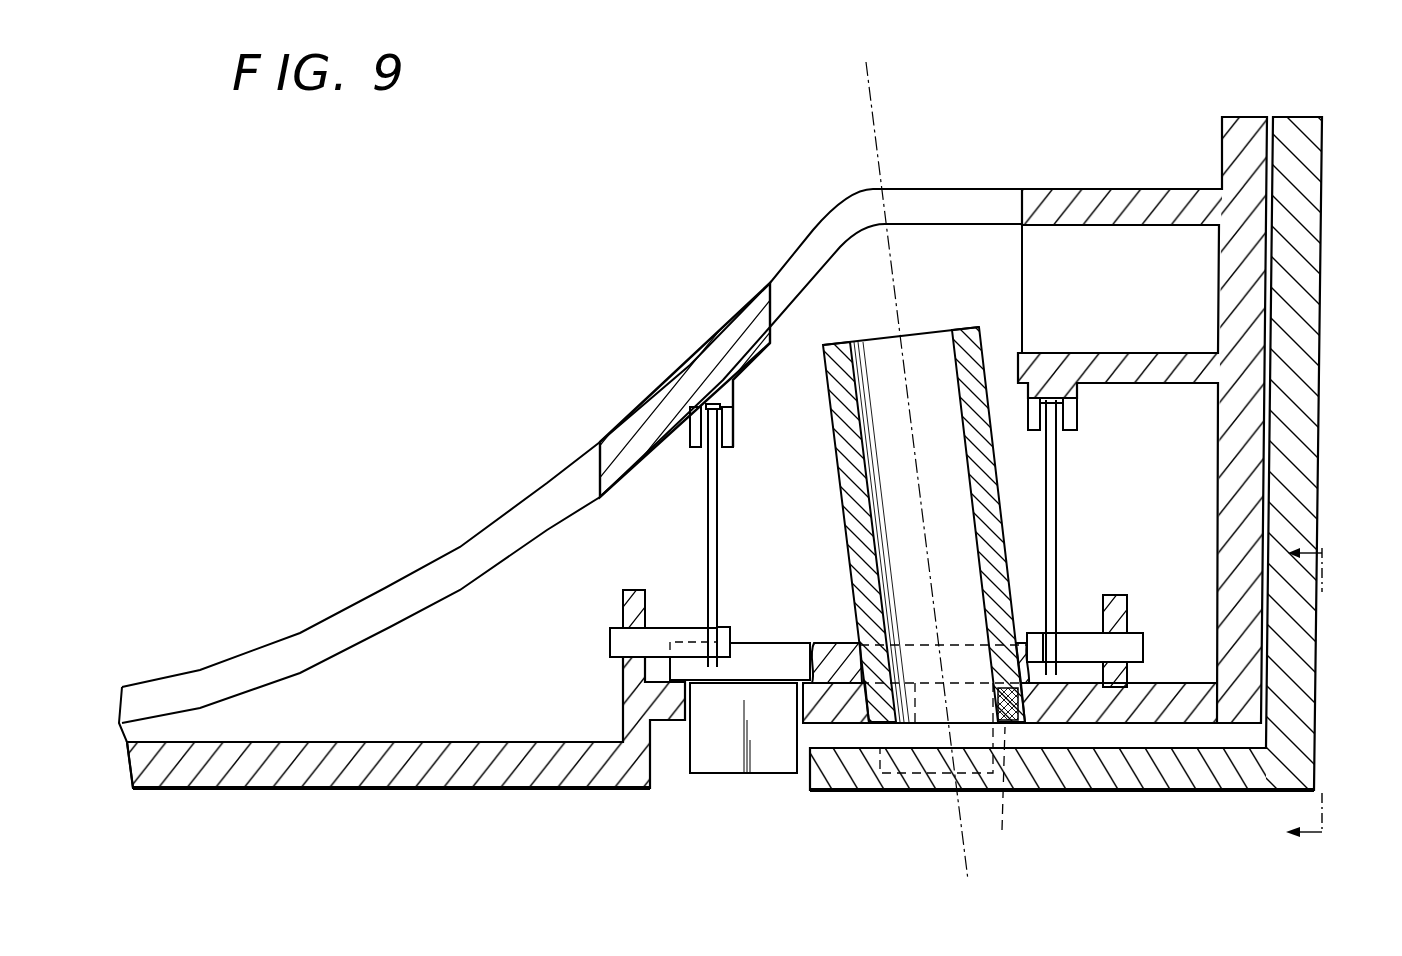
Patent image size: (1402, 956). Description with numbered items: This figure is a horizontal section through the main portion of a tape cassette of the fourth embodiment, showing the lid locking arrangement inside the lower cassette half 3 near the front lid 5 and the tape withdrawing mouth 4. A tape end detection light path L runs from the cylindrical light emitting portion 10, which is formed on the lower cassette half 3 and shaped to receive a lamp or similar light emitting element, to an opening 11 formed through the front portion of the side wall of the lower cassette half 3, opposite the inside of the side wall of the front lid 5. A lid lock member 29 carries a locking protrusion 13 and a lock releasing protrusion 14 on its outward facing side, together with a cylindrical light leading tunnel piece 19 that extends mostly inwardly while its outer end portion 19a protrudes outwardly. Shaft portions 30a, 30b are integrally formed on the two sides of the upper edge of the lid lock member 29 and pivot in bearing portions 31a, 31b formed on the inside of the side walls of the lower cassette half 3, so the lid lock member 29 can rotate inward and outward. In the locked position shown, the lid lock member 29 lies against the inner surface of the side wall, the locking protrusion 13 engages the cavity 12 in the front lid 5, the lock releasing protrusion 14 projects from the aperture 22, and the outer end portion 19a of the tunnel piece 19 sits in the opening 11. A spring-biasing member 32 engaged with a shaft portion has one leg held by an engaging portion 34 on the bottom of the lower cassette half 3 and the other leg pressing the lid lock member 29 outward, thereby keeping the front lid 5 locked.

The lower cassette half 3 is at (375, 775).
The tape withdrawing mouth 4 is at (1243, 265).
The front lid 5 is at (1312, 515).
The cylindrical light emitting portion 10 is at (1324, 700).
The opening 11 is at (1013, 727).
The cavity 12 is at (1012, 795).
The locking protrusion 13 is at (935, 737).
The lock releasing protrusion 14 is at (715, 762).
The cylindrical tunnel piece 19 is at (840, 457).
The outer end portion of tunnel piece 19a is at (895, 735).
The aperture 22 is at (797, 707).
The lid lock member 29 is at (772, 650).
The shaft portion 30a is at (610, 642).
The shaft portion 30b is at (1143, 648).
The bearing portion 31a is at (623, 608).
The bearing portion 31b is at (1130, 613).
The spring-biasing member 32 is at (710, 527).
The engaging portion 34 is at (725, 425).
The tape end detection light path L is at (872, 97).